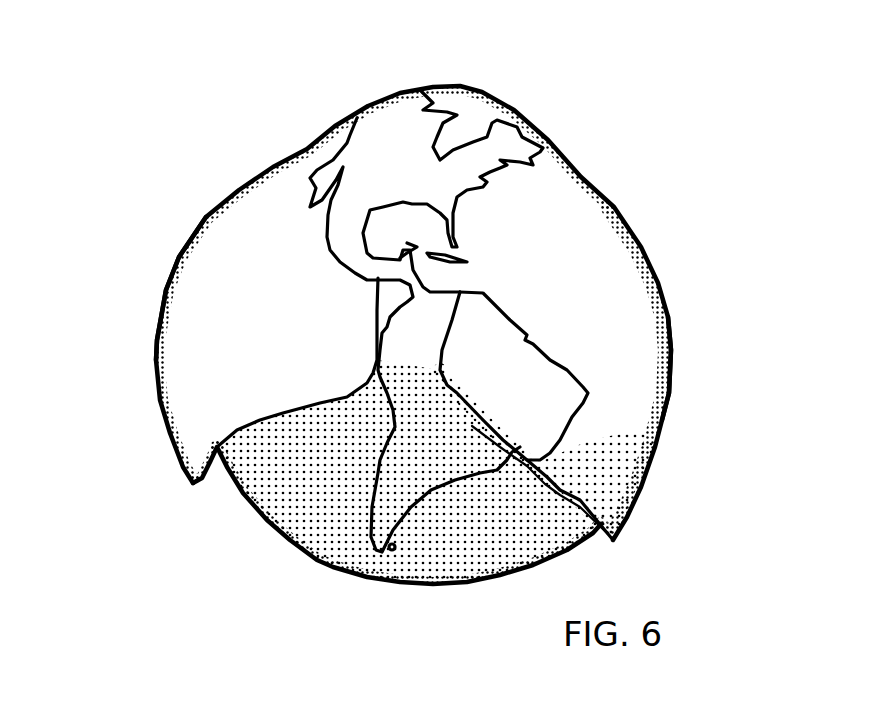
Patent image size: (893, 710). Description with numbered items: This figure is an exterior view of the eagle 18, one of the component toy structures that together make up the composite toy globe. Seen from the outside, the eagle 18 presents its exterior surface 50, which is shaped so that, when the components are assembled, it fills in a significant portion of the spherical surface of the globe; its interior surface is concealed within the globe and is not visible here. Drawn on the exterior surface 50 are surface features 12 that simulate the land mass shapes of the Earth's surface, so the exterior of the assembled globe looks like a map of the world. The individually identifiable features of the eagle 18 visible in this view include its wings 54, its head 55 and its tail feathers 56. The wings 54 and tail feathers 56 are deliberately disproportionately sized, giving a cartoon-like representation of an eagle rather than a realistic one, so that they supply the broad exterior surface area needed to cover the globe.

The surface features 12 is at (508, 382).
The eagle 18 is at (630, 200).
The exterior surface 50 is at (287, 223).
The wings 54 is at (187, 282).
The head 55 is at (465, 120).
The tail feathers 56 is at (304, 493).